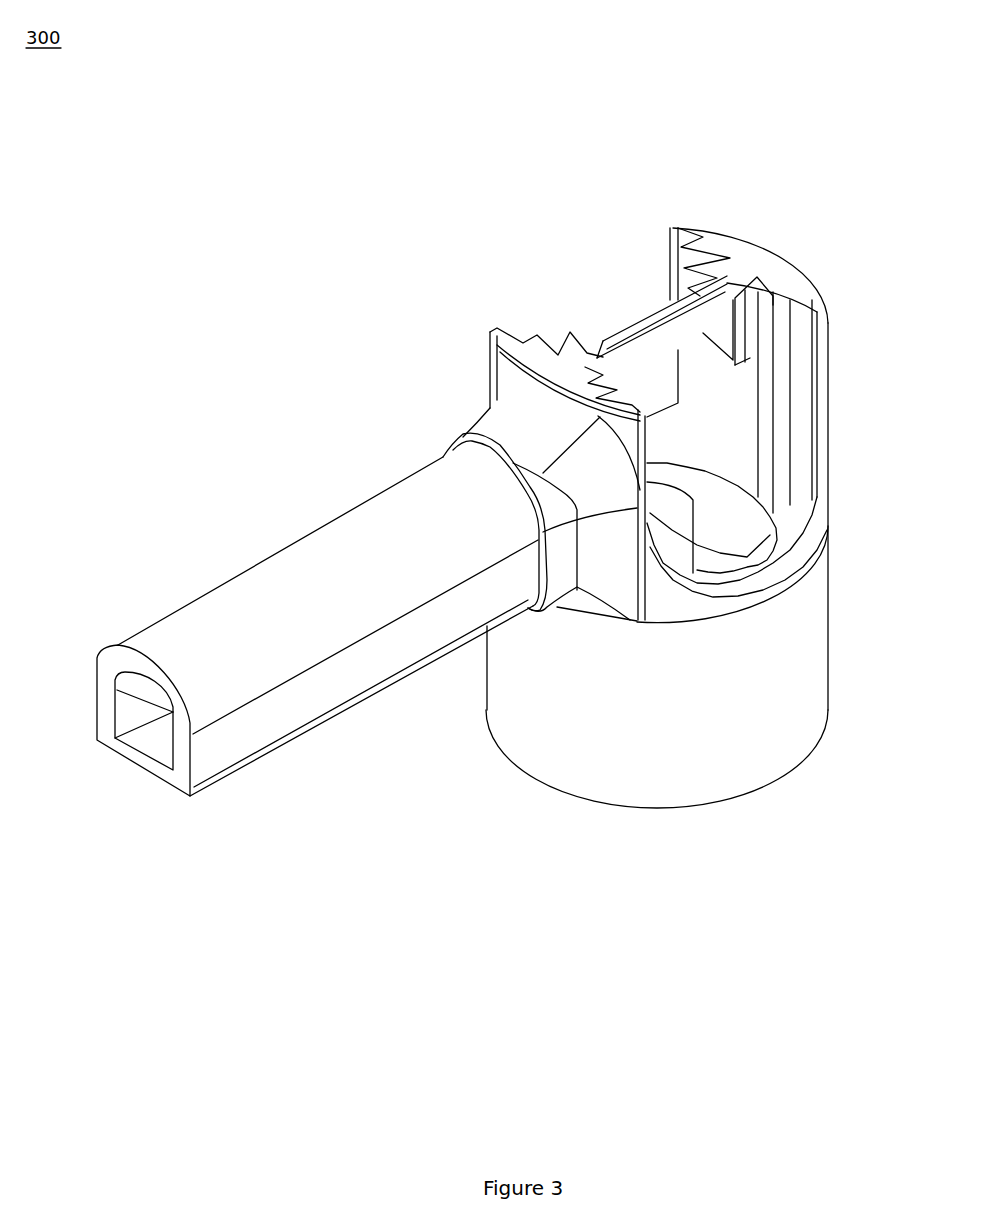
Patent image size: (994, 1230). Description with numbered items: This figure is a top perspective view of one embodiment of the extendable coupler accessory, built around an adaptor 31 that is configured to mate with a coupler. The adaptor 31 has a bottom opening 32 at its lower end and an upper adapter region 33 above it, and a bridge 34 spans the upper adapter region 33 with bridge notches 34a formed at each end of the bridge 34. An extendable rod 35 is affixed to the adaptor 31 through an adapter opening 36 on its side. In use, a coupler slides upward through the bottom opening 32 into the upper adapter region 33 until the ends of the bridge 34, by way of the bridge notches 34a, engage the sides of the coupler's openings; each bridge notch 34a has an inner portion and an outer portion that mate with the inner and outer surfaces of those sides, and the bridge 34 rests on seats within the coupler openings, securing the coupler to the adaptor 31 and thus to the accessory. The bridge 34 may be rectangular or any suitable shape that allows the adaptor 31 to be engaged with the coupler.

The adaptor 31 is at (828, 663).
The bottom opening 32 is at (723, 553).
The upper adapter region 33 is at (823, 343).
The bridge 34 is at (623, 328).
The bridge notches 34a is at (552, 341).
The extendable rod 35 is at (297, 735).
The adapter opening 36 is at (490, 452).